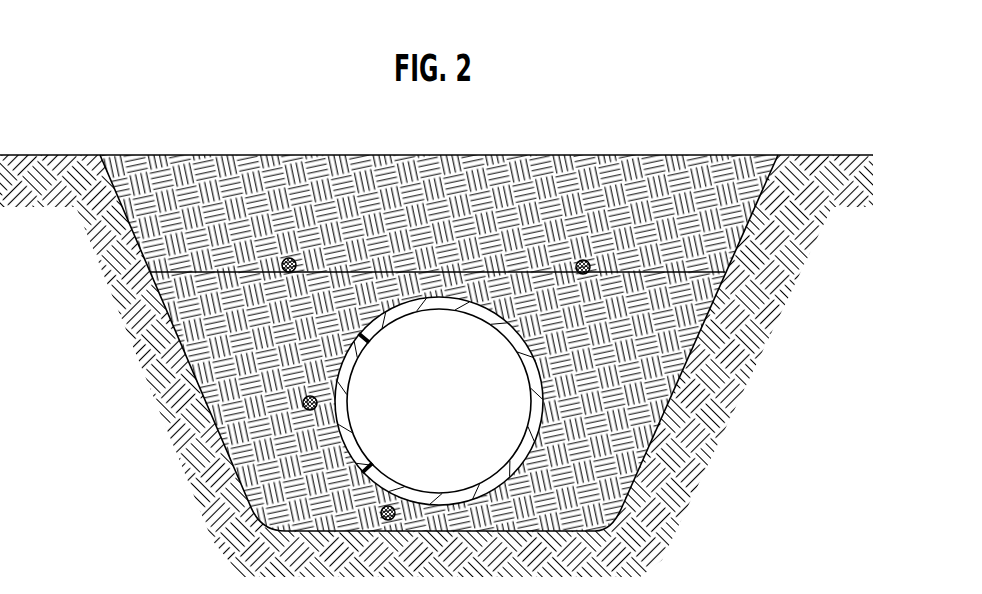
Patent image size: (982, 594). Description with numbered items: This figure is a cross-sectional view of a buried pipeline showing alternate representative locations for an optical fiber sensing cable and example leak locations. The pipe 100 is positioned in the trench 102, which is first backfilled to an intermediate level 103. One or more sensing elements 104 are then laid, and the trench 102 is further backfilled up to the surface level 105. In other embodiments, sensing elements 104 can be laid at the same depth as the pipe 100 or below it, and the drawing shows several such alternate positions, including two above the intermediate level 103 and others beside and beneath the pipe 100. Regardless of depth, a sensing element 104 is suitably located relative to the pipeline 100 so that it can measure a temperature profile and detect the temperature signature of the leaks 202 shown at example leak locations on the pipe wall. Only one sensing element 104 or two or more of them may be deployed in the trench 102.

The pipeline 100 is at (522, 367).
The trench 102 is at (757, 132).
The intermediate level 103 is at (433, 272).
The sensing element 104 is at (278, 251).
The surface level 105 is at (140, 153).
The leaks 202 is at (374, 348).